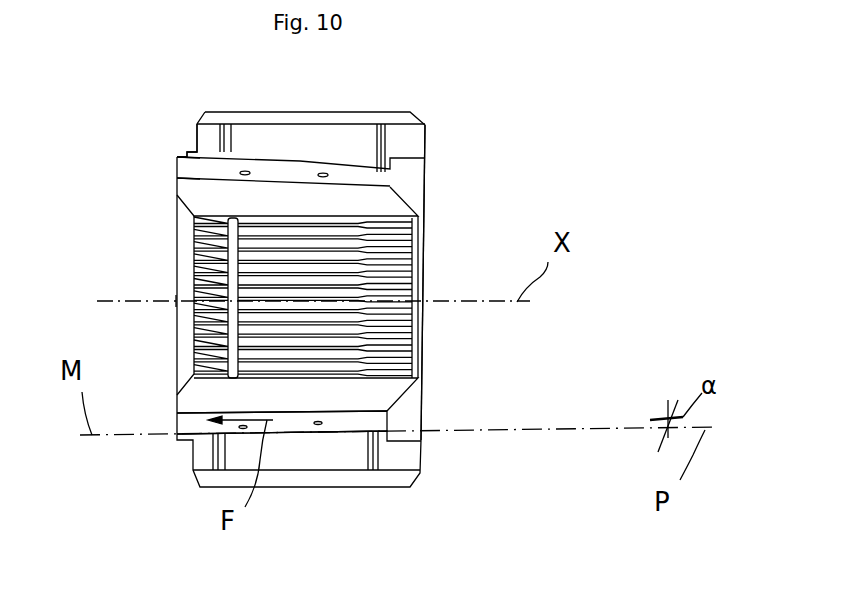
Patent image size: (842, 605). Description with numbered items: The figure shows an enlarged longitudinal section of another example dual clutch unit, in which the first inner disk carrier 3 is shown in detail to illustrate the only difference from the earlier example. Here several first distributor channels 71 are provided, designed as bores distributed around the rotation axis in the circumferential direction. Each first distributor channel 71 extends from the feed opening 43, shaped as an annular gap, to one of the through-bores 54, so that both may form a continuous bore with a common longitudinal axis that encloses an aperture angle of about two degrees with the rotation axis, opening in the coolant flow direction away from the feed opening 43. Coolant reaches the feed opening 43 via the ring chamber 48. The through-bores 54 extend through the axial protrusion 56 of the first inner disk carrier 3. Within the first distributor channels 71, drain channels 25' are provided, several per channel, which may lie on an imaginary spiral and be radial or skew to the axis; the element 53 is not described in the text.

The first inner disk carrier 3 is at (410, 117).
The drain channel 25' is at (305, 254).
The feed opening 43 is at (424, 203).
The ring chamber 48 is at (405, 433).
The opening 53 is at (243, 170).
The through-bore 54 is at (185, 170).
The axial protrusion 56 is at (187, 150).
The first distributor channel 71 is at (380, 182).